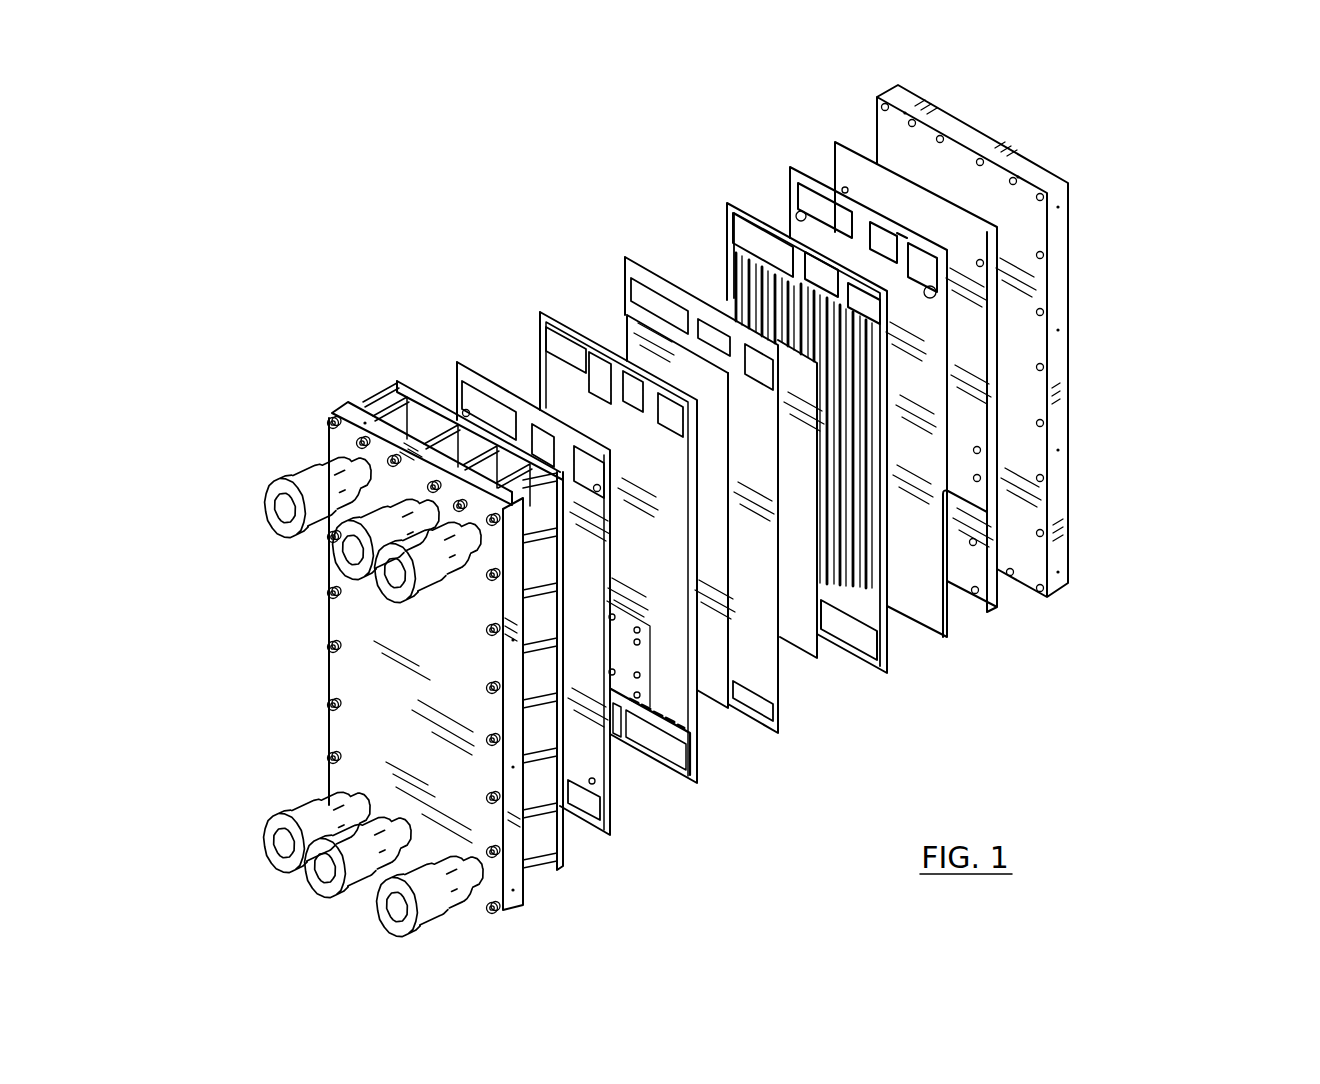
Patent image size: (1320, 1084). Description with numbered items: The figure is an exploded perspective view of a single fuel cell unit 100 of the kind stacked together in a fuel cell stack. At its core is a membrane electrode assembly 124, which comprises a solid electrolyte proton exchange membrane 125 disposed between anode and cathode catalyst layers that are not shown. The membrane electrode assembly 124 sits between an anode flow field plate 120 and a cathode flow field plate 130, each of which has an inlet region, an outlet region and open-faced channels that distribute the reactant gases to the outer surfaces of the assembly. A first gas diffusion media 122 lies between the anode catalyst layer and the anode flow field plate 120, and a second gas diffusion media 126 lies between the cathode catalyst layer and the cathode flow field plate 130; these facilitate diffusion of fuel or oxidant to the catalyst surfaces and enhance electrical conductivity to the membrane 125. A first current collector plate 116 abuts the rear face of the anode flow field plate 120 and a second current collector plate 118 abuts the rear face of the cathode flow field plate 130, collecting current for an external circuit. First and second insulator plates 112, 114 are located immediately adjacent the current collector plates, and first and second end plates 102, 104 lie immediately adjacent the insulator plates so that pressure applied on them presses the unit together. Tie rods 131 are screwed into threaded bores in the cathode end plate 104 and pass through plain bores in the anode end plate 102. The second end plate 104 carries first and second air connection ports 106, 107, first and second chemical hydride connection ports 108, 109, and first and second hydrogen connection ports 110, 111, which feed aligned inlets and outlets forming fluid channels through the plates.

The fuel cell unit 100 is at (1157, 482).
The first end plate 102 is at (1066, 380).
The second end plate 104 is at (383, 746).
The first air connection port 106 is at (268, 513).
The second air connection port 107 is at (410, 926).
The first chemical hydride connection port 108 is at (340, 565).
The second chemical hydride connection port 109 is at (318, 876).
The first hydrogen connection port 110 is at (385, 590).
The second hydrogen connection port 111 is at (266, 832).
The first insulator plate 112 is at (843, 135).
The second insulator plate 114 is at (412, 382).
The first current collector plate 116 is at (790, 167).
The second current collector plate 118 is at (457, 360).
The anode flow field plate 120 is at (727, 204).
The first gas diffusion media 122 is at (797, 650).
The membrane electrode assembly 124 is at (625, 258).
The proton exchange membrane 125 is at (620, 310).
The second gas diffusion media 126 is at (717, 706).
The cathode flow field plate 130 is at (538, 315).
The tie rods 131 is at (360, 396).